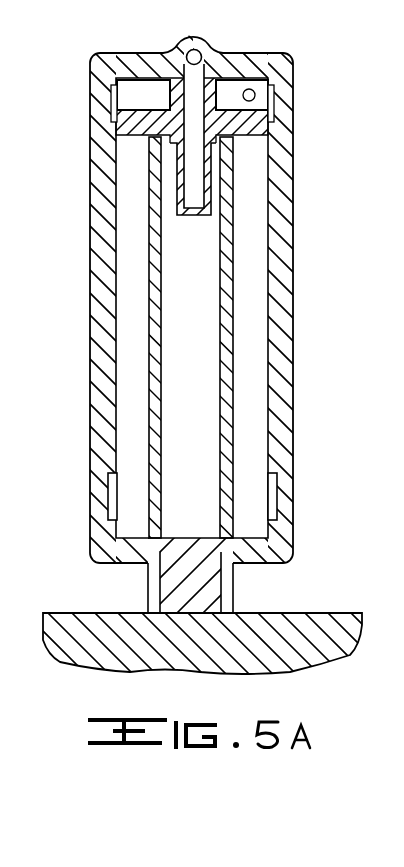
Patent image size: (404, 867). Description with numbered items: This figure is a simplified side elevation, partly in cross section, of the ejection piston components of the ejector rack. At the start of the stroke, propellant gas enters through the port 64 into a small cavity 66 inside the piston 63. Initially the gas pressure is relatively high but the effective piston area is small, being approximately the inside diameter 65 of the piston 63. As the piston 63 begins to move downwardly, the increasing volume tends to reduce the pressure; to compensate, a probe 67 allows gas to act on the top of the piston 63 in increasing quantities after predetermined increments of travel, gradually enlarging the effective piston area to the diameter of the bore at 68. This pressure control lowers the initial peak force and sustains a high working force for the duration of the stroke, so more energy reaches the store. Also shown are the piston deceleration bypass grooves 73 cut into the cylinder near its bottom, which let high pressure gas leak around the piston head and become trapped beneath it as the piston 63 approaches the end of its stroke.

The piston 63 is at (147, 258).
The port 64 is at (202, 50).
The inside diameter 65 is at (276, 128).
The small cavity 66 is at (168, 482).
The probe 67 is at (208, 203).
The bore 68 is at (270, 273).
The piston deceleration bypass grooves 73 is at (272, 492).